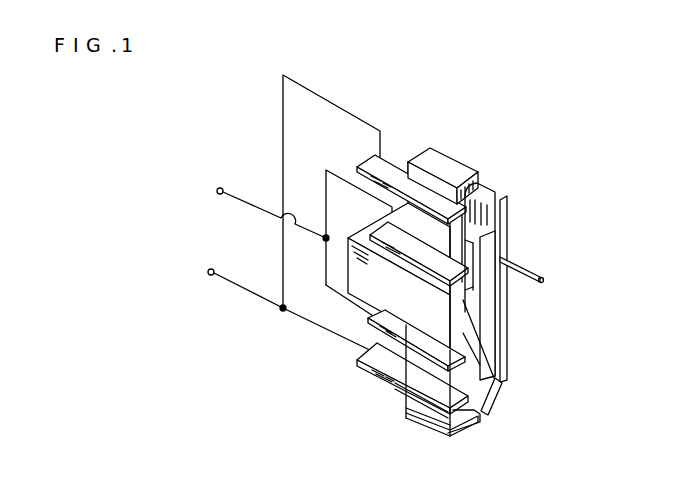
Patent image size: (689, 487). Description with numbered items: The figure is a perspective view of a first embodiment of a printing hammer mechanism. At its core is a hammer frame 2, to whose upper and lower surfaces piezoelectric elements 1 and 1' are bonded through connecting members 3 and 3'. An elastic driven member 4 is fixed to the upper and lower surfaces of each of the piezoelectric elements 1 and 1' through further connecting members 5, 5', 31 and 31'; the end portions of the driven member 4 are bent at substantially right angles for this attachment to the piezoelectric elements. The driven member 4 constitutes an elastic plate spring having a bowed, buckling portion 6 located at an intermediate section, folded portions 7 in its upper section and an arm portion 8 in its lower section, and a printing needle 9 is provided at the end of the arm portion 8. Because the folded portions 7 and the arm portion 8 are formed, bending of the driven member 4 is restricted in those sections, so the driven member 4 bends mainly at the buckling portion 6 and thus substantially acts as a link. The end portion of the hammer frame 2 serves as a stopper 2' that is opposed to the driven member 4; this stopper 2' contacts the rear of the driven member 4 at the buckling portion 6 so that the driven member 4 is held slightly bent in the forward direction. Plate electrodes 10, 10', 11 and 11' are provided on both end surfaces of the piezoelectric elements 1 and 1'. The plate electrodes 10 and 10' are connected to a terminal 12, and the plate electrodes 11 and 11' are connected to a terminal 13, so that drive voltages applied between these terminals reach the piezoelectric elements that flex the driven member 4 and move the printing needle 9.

The piezoelectric element 1 is at (438, 242).
The piezoelectric element 1' is at (423, 390).
The hammer frame 2 is at (380, 284).
The end portion (stopper) 2' is at (515, 294).
The connecting member 3 is at (390, 331).
The connecting member 3' is at (411, 363).
The elastic driven member 4 is at (490, 220).
The connecting member 5 is at (471, 173).
The connecting member 5' is at (442, 440).
The buckling portion 6 is at (475, 323).
The folded portions 7 is at (511, 233).
The arm portion 8 is at (504, 385).
The printing needle 9 is at (544, 280).
The plate electrode 10 is at (411, 166).
The plate electrode 10' is at (410, 409).
The plate electrode 11 is at (419, 254).
The plate electrode 11' is at (402, 378).
The terminal 12 is at (209, 273).
The terminal 13 is at (220, 192).
The connecting member 31 is at (443, 159).
The connecting member 31' is at (442, 443).